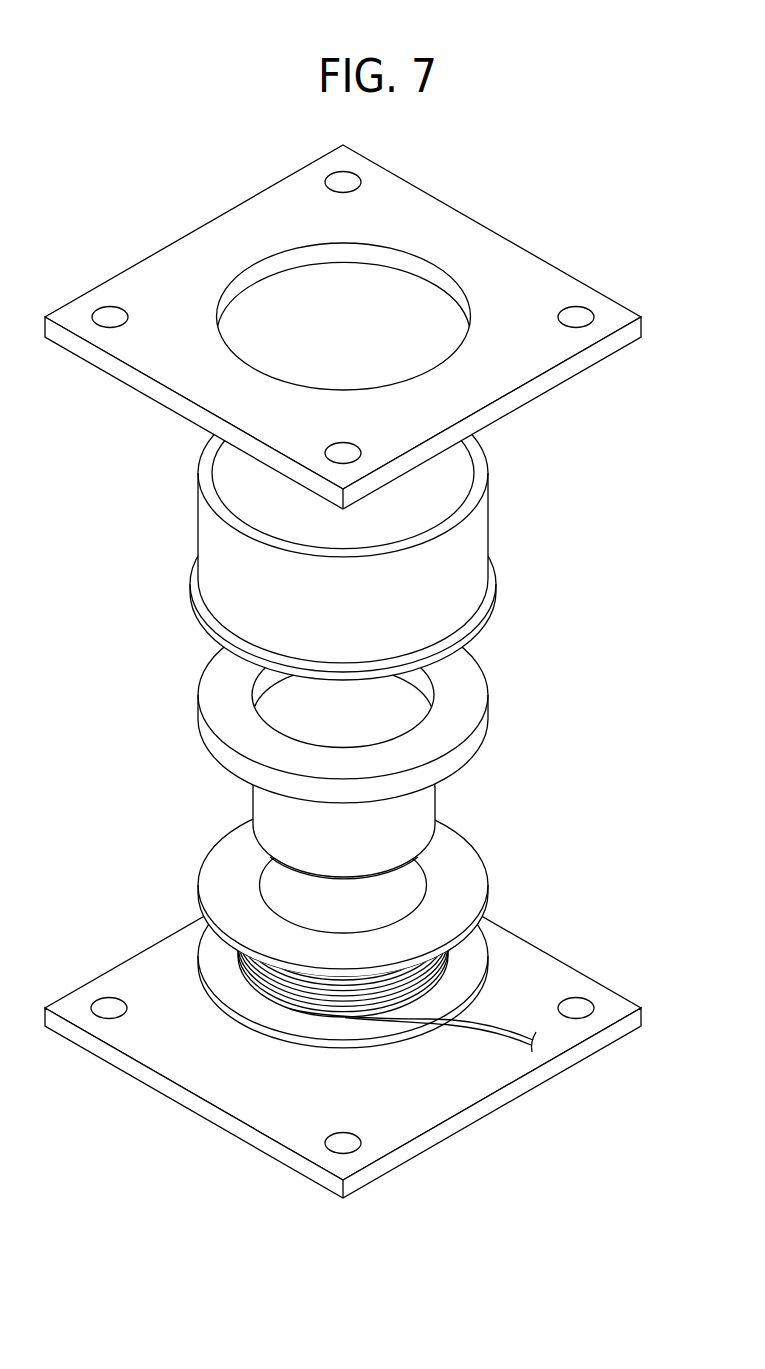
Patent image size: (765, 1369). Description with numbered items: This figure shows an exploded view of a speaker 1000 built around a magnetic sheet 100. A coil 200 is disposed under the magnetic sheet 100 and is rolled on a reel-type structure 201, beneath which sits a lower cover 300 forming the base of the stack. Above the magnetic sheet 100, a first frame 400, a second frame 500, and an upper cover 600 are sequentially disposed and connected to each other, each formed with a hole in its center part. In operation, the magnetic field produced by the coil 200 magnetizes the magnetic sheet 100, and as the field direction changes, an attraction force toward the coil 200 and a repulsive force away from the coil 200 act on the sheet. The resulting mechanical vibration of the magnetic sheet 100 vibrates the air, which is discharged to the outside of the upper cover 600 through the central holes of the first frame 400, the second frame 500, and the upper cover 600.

The speaker 1000 is at (165, 156).
The upper cover 600 is at (523, 265).
The second frame 500 is at (475, 552).
The first frame 400 is at (470, 683).
The magnetic sheet 100 is at (418, 812).
The reel-type structure 201 is at (464, 872).
The coil 200 is at (478, 1032).
The lower cover 300 is at (547, 977).